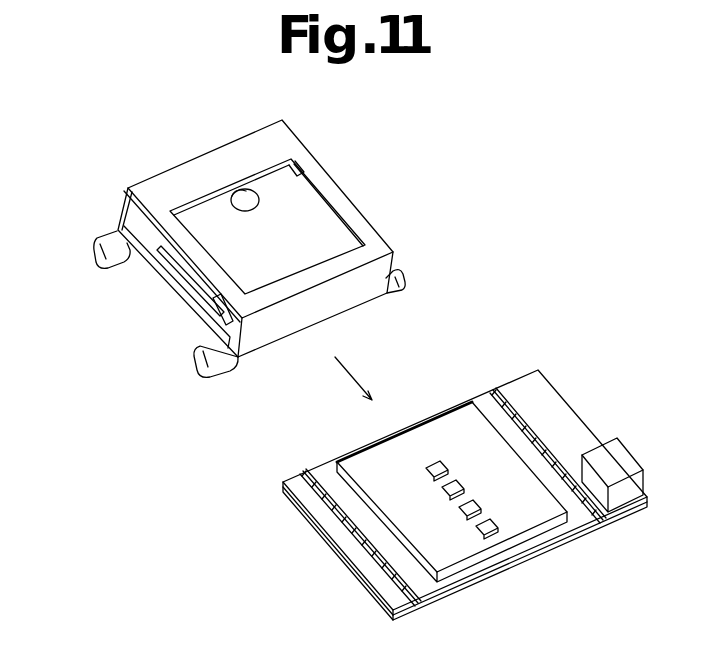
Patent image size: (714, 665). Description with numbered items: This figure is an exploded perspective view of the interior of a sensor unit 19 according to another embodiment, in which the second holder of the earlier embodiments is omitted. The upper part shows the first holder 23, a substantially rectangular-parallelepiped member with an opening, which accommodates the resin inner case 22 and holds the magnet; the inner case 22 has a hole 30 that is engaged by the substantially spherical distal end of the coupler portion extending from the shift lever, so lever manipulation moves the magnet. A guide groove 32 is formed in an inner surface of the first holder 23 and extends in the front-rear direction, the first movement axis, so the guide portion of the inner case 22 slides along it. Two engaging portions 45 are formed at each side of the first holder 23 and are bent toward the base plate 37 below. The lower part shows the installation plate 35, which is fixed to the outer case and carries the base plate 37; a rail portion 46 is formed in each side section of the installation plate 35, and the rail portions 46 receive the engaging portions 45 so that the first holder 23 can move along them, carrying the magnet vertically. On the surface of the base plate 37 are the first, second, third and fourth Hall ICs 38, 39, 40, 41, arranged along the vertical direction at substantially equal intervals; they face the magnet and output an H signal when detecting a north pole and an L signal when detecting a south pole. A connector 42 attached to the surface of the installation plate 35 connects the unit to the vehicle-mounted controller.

The sensor unit 19 is at (486, 144).
The inner case 22 is at (268, 185).
The first holder 23 is at (140, 188).
The hole 30 is at (238, 192).
The guide groove 32 is at (236, 354).
The installation plate 35 is at (583, 523).
The base plate 37 is at (427, 425).
The first Hall IC 38 is at (440, 461).
The second Hall IC 39 is at (458, 486).
The third Hall IC 40 is at (478, 506).
The fourth Hall IC 41 is at (496, 524).
The connector 42 is at (630, 454).
The engaging portion 45 is at (98, 254).
The rail portion 46 is at (500, 393).